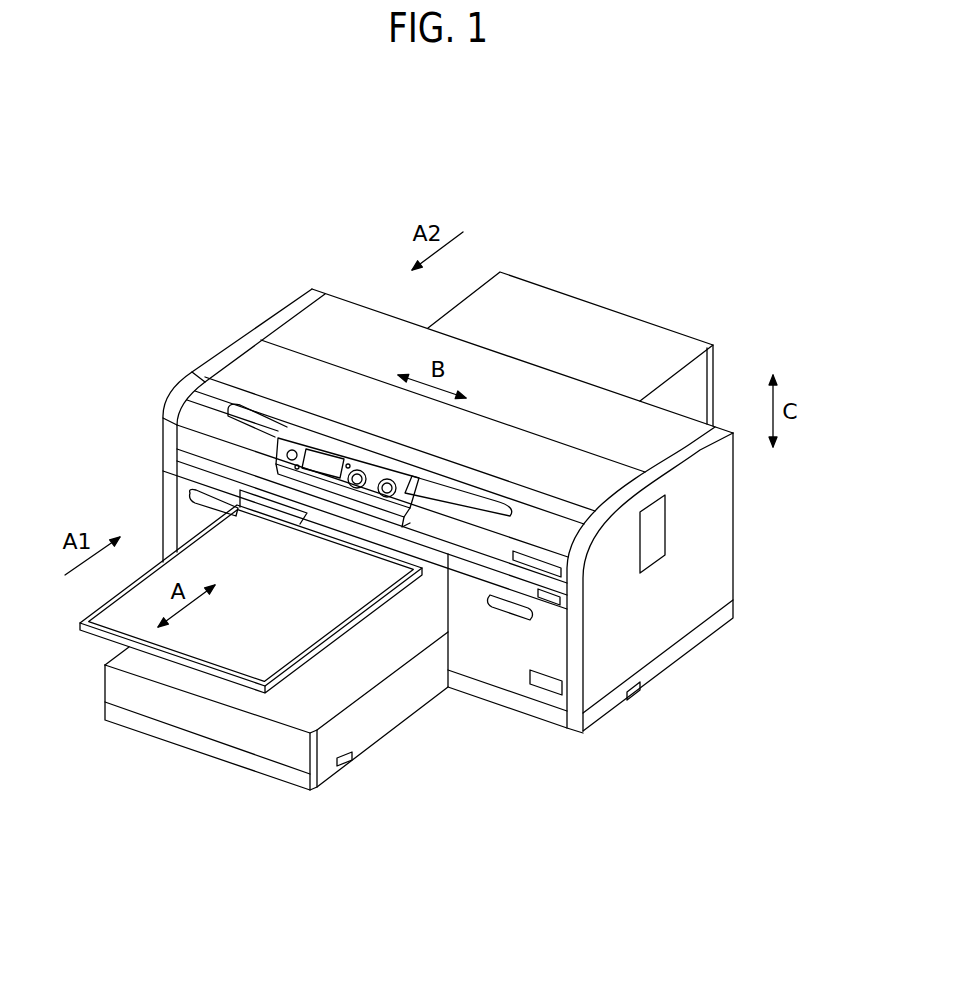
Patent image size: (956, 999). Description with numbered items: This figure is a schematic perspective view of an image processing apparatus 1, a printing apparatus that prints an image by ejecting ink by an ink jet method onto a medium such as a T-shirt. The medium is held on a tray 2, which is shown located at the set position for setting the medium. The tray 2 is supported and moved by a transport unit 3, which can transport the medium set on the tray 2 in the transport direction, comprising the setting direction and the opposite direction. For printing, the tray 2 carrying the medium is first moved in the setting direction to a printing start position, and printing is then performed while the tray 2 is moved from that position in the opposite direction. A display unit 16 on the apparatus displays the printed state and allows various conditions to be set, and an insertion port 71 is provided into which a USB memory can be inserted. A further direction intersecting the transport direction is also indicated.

The image processing apparatus 1 is at (590, 238).
The tray 2 is at (235, 643).
The transport unit 3 is at (368, 722).
The display unit 16 is at (321, 460).
The insertion port 71 is at (547, 688).